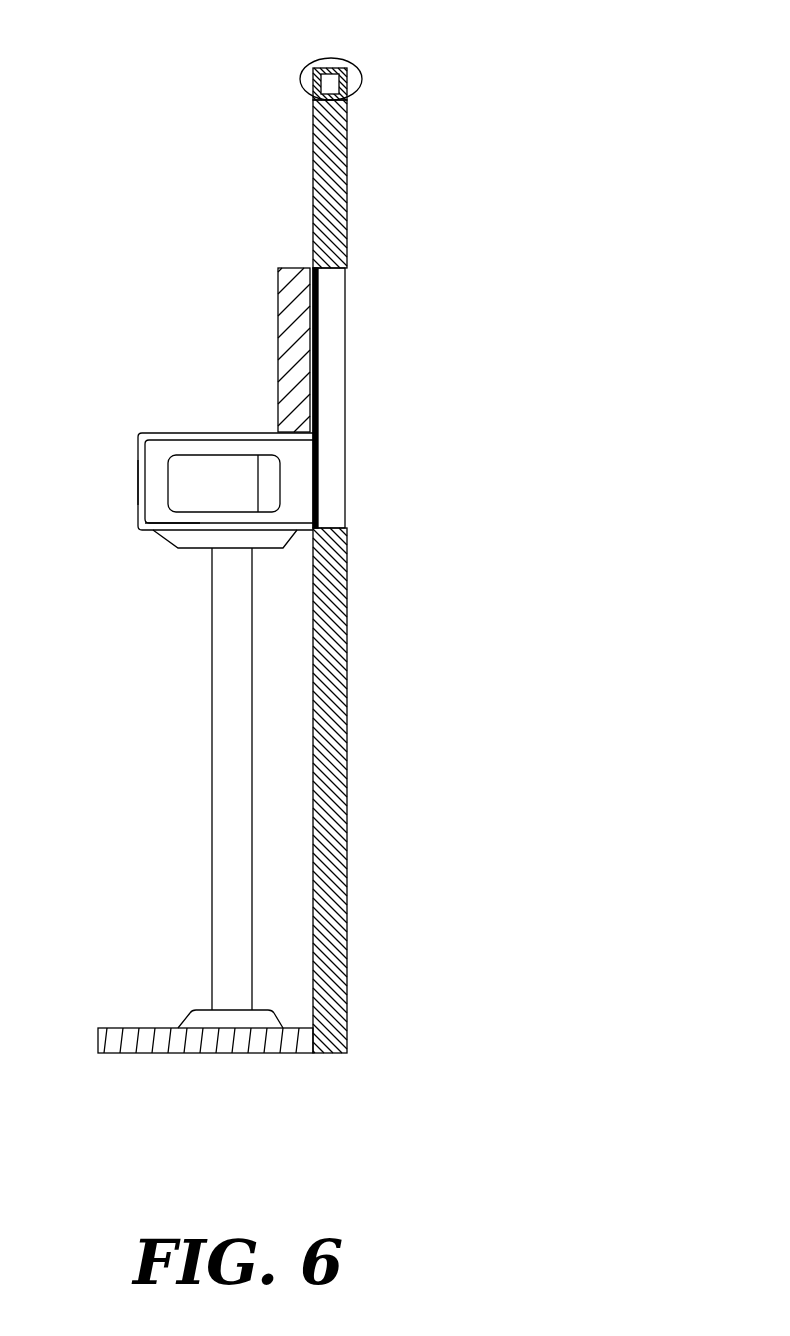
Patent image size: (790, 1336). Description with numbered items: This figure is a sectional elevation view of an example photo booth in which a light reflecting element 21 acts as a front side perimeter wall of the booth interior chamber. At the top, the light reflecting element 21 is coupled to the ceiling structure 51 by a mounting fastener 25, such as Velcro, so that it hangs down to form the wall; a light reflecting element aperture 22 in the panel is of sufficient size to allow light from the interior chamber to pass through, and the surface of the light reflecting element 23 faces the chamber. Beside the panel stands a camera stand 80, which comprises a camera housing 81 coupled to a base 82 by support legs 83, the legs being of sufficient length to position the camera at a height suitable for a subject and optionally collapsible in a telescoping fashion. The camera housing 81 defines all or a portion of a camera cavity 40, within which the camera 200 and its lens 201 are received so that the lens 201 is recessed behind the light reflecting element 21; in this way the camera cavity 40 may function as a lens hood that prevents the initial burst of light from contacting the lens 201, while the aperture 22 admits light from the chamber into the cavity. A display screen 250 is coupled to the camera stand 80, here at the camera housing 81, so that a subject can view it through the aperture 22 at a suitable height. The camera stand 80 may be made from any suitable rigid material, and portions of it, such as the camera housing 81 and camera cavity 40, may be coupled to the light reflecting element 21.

The light reflecting element 21 is at (335, 787).
The light reflecting element aperture 22 is at (333, 403).
The surface of the light reflecting element 23 is at (350, 608).
The mounting fastener 25 is at (360, 92).
The camera cavity 40 is at (158, 507).
The ceiling structure 51 is at (330, 80).
The camera stand 80 is at (212, 555).
The camera housing 81 is at (138, 482).
The base 82 is at (175, 1042).
The support legs 83 is at (230, 700).
The camera 200 is at (198, 475).
The lens 201 is at (270, 473).
The display screen 250 is at (297, 327).